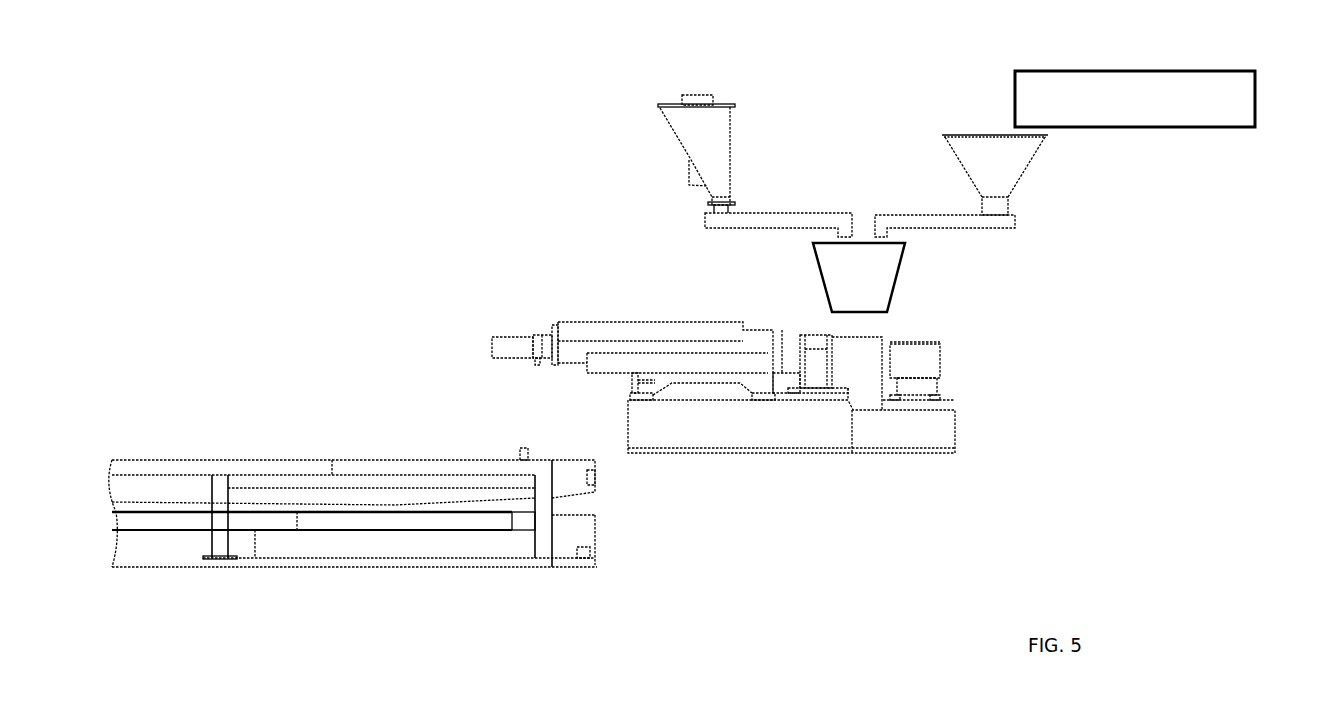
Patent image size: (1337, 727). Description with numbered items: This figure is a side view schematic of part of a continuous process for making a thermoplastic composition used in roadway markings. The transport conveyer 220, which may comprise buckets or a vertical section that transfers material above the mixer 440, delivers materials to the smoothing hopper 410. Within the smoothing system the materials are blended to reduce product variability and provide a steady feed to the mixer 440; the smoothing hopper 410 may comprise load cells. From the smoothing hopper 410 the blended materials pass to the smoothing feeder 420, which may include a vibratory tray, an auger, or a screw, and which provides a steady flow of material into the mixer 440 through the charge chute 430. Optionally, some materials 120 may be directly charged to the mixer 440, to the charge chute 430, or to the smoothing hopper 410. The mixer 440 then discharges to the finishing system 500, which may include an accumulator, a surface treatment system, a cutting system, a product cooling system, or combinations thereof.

The materials 120 is at (725, 160).
The transport conveyer 220 is at (1207, 93).
The smoothing hopper 410 is at (1008, 157).
The smoothing feeder 420 is at (910, 217).
The charge chute 430 is at (860, 282).
The mixer 440 is at (698, 455).
The finishing system 500 is at (412, 470).